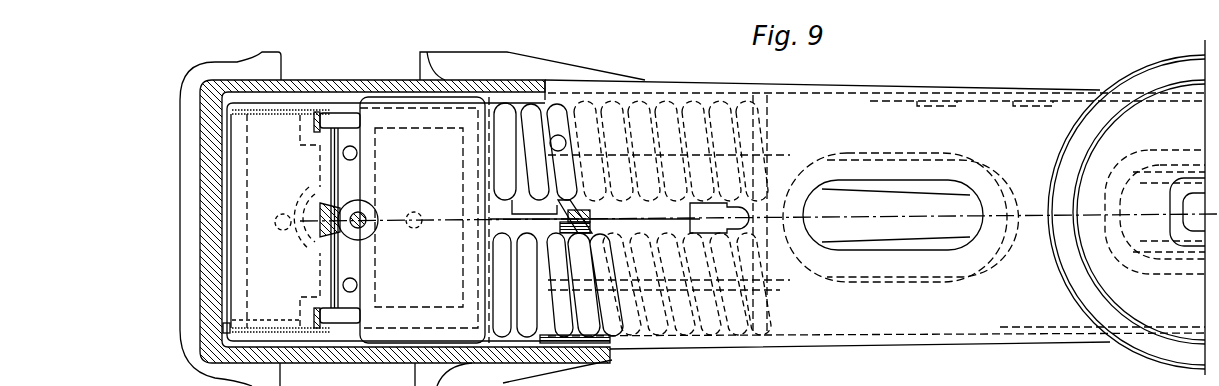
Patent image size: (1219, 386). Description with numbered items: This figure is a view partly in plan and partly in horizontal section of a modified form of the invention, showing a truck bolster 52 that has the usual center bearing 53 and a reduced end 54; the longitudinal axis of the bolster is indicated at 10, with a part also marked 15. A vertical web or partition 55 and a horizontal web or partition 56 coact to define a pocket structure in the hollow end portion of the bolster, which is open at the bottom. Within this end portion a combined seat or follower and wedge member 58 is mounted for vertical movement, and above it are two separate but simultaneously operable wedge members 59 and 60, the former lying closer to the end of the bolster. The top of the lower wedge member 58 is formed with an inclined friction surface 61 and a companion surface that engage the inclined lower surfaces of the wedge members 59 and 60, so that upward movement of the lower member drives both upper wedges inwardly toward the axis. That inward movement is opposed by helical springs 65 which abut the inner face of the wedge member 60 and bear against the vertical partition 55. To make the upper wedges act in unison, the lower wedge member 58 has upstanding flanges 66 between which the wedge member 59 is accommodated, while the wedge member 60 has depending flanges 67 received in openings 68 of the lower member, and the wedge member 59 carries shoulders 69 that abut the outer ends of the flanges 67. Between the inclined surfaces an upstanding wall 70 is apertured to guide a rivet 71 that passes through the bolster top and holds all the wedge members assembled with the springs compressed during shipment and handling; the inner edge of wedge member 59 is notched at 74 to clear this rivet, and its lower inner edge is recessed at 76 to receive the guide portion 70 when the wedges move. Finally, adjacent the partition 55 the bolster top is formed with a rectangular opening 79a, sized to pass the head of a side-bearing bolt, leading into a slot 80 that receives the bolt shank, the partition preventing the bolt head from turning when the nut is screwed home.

The longitudinal axis 10 is at (300, 222).
The pivot opening 15 is at (378, 223).
The bolster 52 is at (954, 343).
The center bearing 53 is at (1133, 207).
The reduced end 54 is at (203, 292).
The vertical web or partition 55 is at (765, 310).
The horizontal web or partition 56 is at (605, 360).
The combined seat or follower and wedge member 58 is at (224, 328).
The wedge member 59 is at (317, 218).
The wedge member 60 is at (419, 217).
The inclined friction surface 61 is at (290, 330).
The helical springs 65 is at (503, 246).
The upstanding flanges 66 is at (315, 338).
The depending flanges 67 is at (350, 320).
The openings 68 is at (397, 97).
The shoulders 69 is at (316, 315).
The upstanding wall 70 is at (368, 209).
The rivet 71 is at (368, 223).
The notch 74 is at (320, 226).
The notch or recess 76 is at (306, 197).
The rectangular opening 79a is at (676, 233).
The slot 80 is at (750, 212).